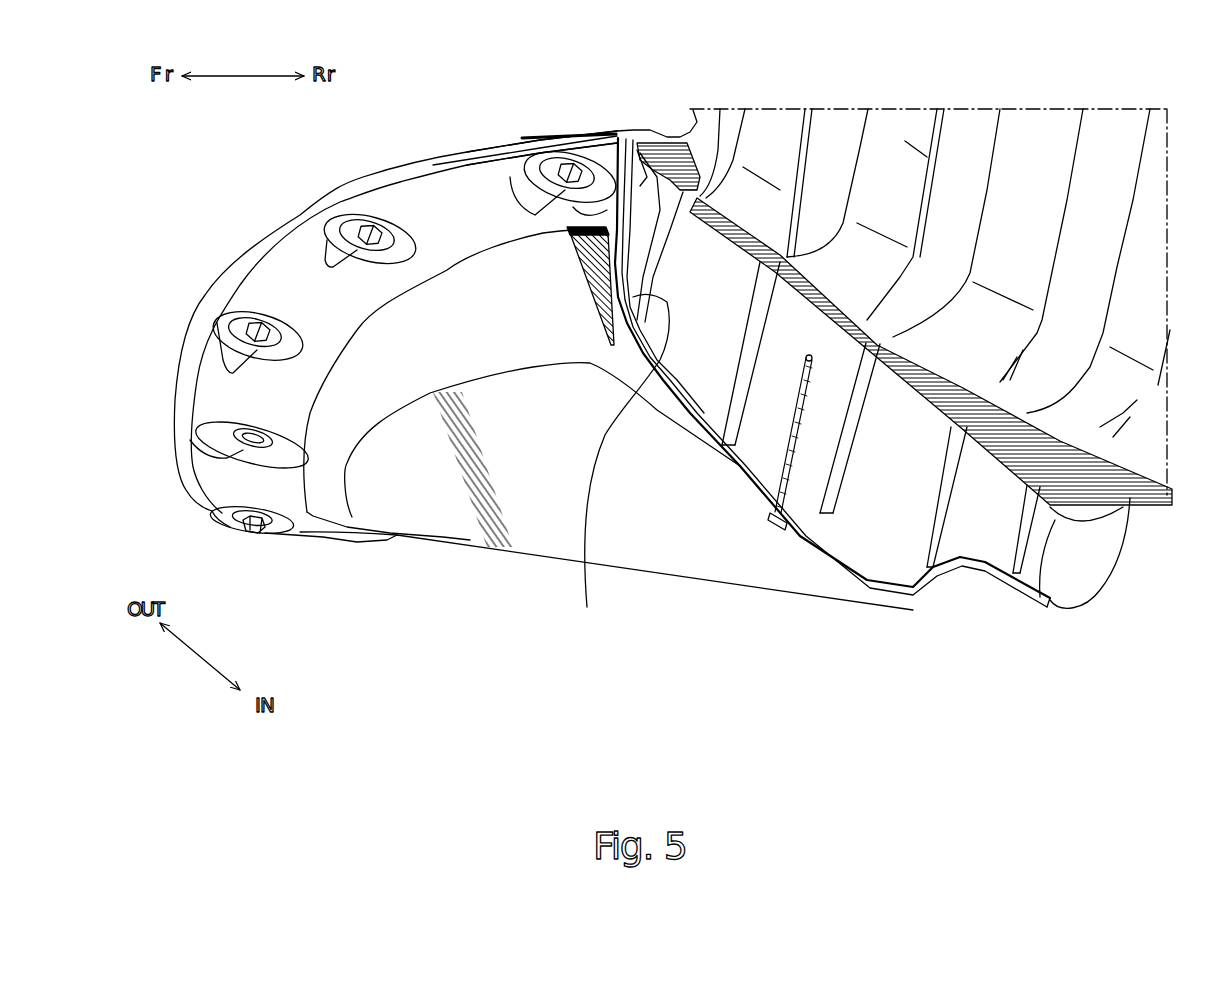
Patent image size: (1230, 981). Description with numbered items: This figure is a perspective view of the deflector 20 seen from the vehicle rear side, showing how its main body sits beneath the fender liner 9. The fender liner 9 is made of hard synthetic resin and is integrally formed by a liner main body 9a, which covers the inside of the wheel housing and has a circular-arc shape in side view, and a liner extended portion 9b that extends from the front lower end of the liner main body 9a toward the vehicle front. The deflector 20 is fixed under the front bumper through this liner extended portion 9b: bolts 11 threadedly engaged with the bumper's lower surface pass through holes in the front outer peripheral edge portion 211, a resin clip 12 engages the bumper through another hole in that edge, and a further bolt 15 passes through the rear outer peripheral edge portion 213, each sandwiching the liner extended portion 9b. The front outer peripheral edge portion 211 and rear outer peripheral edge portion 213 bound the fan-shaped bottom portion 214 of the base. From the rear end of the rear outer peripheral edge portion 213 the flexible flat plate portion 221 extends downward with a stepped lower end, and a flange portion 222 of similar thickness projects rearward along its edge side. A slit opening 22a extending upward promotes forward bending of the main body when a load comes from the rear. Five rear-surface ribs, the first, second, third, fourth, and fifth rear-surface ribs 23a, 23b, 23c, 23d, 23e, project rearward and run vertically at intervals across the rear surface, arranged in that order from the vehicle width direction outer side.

The fender liner 9 is at (689, 128).
The liner main body 9a is at (927, 157).
The liner extended portion 9b is at (645, 183).
The bolt 11 is at (327, 258).
The resin clip 12 is at (203, 455).
The bolt 15 is at (535, 215).
The deflector 20 is at (252, 246).
The front outer peripheral edge portion 211 is at (443, 197).
The rear outer peripheral edge portion 213 is at (598, 205).
The fan-shaped bottom portion 214 is at (460, 510).
The flat plate portion 221 is at (1087, 567).
The flange portion 222 is at (912, 592).
The slit opening 22a is at (785, 525).
The first rear-surface rib 23a is at (587, 607).
The second rear-surface rib 23b is at (740, 415).
The third rear-surface rib 23c is at (815, 478).
The fourth rear-surface rib 23d is at (930, 560).
The fifth rear-surface rib 23e is at (1045, 540).